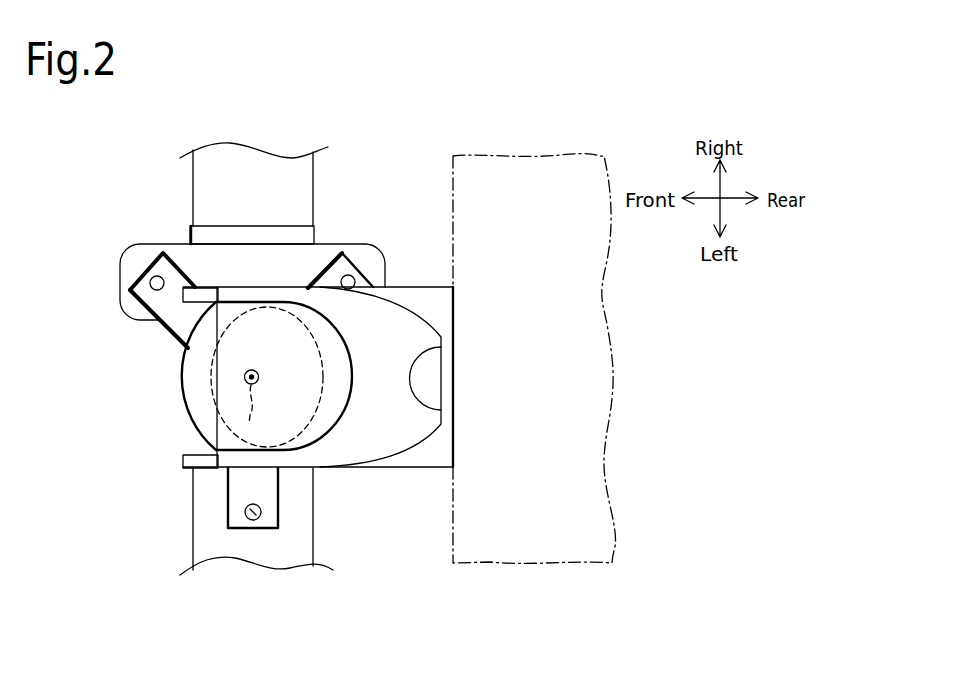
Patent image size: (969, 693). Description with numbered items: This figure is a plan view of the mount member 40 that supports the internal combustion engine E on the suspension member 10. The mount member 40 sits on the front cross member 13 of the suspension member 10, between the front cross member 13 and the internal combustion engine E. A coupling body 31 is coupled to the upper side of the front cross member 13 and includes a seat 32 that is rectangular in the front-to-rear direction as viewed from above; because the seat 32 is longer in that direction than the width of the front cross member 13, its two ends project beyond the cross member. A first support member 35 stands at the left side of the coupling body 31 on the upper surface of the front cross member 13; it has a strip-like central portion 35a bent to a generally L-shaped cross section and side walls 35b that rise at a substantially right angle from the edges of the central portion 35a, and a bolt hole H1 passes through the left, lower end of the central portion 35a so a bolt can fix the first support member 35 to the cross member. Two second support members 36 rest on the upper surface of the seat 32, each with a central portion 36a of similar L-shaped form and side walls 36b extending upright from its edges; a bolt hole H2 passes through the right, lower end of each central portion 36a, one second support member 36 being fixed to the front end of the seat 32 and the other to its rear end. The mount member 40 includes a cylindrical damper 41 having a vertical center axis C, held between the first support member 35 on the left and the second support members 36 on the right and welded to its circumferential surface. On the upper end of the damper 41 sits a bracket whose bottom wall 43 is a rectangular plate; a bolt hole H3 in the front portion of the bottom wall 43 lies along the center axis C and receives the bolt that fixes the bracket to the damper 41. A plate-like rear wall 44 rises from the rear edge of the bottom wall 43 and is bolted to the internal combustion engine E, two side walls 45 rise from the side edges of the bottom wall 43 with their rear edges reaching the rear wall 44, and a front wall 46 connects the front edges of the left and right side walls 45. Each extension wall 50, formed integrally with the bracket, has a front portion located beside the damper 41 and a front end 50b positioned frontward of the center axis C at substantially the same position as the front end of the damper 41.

The suspension member 10 is at (253, 182).
The front cross member 13 is at (313, 173).
The coupling body 31 is at (242, 258).
The seat 32 is at (127, 258).
The first support member 35 is at (248, 565).
The central portion 35a is at (253, 530).
The side walls 35b is at (228, 523).
The second support members 36 is at (196, 277).
The central portion 36a is at (150, 290).
The side walls 36b is at (160, 322).
The mount member 40 is at (301, 381).
The damper 41 is at (183, 393).
The bottom wall 43 is at (289, 348).
The rear wall 44 is at (452, 374).
The side walls 45 is at (418, 296).
The front wall 46 is at (376, 413).
The extension wall 50 is at (161, 393).
The front end 50b is at (183, 472).
The bolt hole H1 is at (245, 511).
The bolt hole H2 is at (150, 279).
The bolt hole H3 is at (262, 377).
The center axis C is at (257, 416).
The internal combustion engine E is at (613, 375).